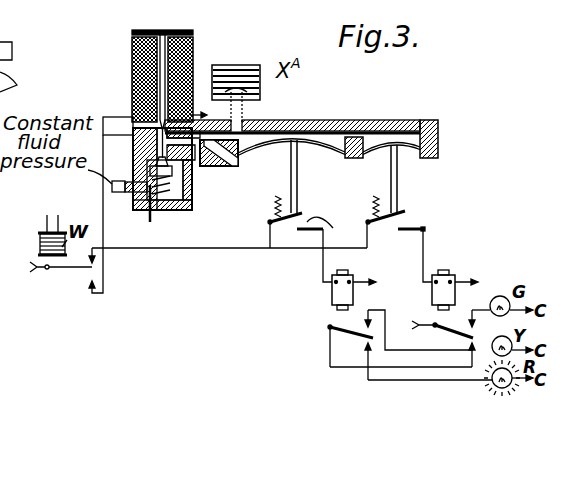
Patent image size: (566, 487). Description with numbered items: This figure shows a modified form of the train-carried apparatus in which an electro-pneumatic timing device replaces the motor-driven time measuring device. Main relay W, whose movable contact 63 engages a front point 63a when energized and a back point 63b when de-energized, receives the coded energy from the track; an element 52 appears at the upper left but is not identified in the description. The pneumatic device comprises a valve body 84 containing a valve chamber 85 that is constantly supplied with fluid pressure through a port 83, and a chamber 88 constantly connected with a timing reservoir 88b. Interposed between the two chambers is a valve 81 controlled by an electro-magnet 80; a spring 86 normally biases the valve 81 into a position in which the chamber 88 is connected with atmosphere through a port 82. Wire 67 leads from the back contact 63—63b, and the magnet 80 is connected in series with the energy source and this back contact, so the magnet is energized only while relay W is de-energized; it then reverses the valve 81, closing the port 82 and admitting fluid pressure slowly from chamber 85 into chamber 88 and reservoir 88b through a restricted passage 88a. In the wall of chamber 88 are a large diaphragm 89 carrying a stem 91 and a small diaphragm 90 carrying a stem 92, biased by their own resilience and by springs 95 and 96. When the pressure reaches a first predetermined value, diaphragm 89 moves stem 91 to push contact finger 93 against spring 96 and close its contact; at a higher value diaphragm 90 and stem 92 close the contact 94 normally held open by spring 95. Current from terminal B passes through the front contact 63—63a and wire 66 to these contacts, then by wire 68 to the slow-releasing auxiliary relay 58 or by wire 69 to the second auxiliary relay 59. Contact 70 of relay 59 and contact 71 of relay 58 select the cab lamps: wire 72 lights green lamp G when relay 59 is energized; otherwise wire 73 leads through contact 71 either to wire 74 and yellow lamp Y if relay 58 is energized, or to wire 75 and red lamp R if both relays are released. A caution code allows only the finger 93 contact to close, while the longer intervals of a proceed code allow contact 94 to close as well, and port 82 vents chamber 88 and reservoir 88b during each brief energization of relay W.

The indicator device 52 is at (12, 48).
The auxiliary relay 58 is at (347, 293).
The second auxiliary relay 59 is at (432, 288).
The contact of relay W 63 is at (60, 269).
The front contact point of relay W 63a is at (96, 258).
The back contact point of relay W 63b is at (96, 287).
The wire 66 is at (229, 247).
The wire 67 is at (102, 198).
The wire 68 is at (322, 268).
The wire 69 is at (426, 236).
The contact of relay 59 70 is at (455, 336).
The contact of relay 58 71 is at (343, 332).
The wire 72 is at (488, 326).
The wire 73 is at (357, 368).
The wire 74 is at (411, 352).
The wire 75 is at (471, 381).
The electro-magnet 80 is at (187, 68).
The valve 81 is at (135, 108).
The port 82 is at (118, 126).
The port 83 is at (115, 183).
The valve body 84 is at (280, 121).
The valve chamber 85 is at (159, 196).
The spring 86 is at (193, 195).
The chamber 88 is at (342, 121).
The restricted passage 88a is at (241, 163).
The timing reservoir 88b is at (268, 60).
The second diaphragm 89 is at (268, 144).
The diaphragm 90 is at (374, 150).
The stem 91 is at (298, 168).
The stem 92 is at (394, 189).
The contact finger 93 is at (330, 227).
The contact 94 is at (402, 229).
The spring 95 is at (371, 203).
The spring 96 is at (274, 201).